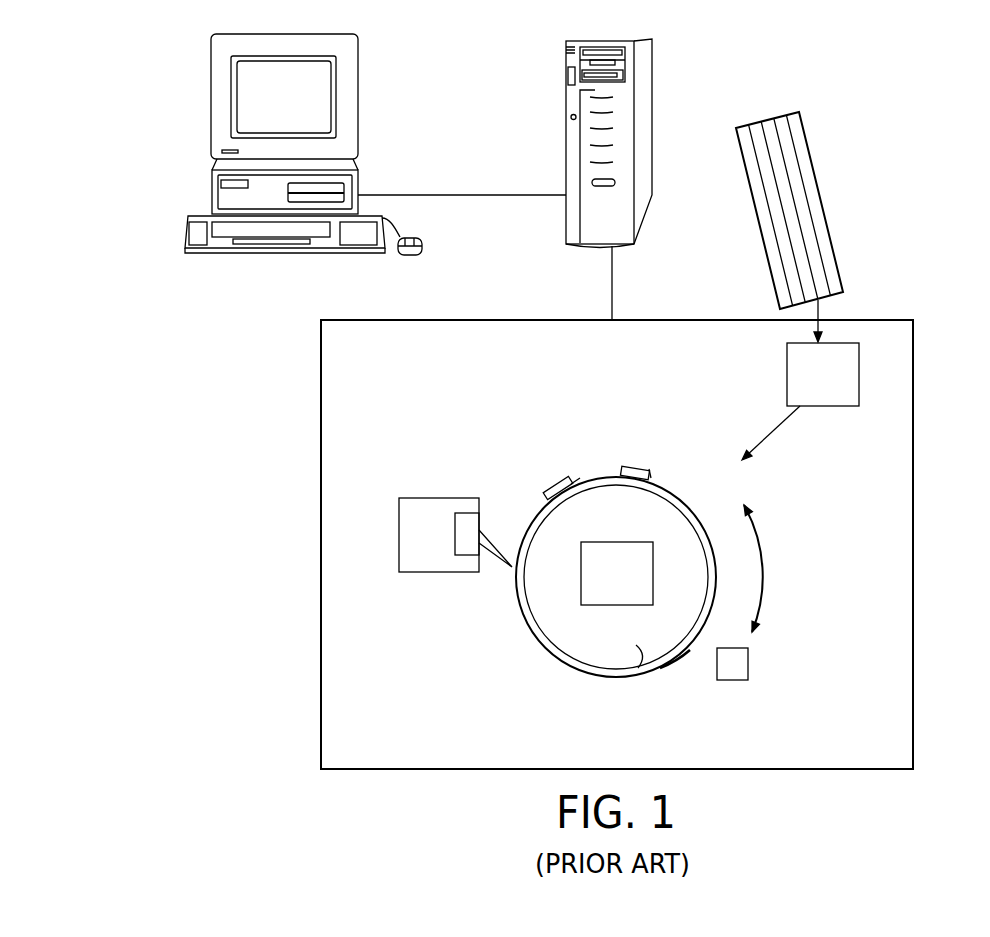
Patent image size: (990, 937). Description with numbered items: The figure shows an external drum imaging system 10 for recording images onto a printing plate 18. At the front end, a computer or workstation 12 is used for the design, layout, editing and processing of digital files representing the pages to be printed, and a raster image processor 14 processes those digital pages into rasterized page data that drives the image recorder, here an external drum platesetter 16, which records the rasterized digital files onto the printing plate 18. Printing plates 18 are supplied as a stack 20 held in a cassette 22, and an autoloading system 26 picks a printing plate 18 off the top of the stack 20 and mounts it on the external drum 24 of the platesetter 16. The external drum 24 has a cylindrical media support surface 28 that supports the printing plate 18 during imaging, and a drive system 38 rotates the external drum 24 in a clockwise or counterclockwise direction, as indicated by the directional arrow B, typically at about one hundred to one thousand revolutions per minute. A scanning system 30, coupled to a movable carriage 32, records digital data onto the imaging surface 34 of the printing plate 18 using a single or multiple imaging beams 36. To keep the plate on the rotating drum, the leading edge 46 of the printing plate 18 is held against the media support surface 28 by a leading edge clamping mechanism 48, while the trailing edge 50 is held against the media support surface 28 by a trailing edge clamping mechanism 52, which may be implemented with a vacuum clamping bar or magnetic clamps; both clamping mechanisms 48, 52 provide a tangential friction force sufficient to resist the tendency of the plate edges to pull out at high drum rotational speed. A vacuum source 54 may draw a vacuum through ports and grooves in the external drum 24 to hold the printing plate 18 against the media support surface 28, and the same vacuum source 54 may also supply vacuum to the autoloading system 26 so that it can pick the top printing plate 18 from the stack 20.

The external drum imaging system 10 is at (924, 215).
The front end computer or workstation 12 is at (211, 126).
The raster image processor 14 is at (566, 105).
The external drum platesetter 16 is at (333, 387).
The printing plate 18 is at (805, 168).
The stack 20 is at (786, 154).
The cassette 22 is at (754, 210).
The external drum 24 is at (636, 670).
The autoloading system 26 is at (836, 388).
The media support surface 28 is at (677, 650).
The scanning system 30 is at (463, 520).
The movable carriage 32 is at (430, 572).
The imaging surface 34 is at (602, 675).
The imaging beam 36 is at (489, 517).
The drive system 38 is at (630, 589).
The leading edge 46 is at (545, 497).
The leading edge clamping mechanism 48 is at (575, 482).
The trailing edge 50 is at (663, 480).
The trailing edge clamping mechanism 52 is at (632, 470).
The vacuum source 54 is at (732, 663).
The directional arrow B is at (764, 564).